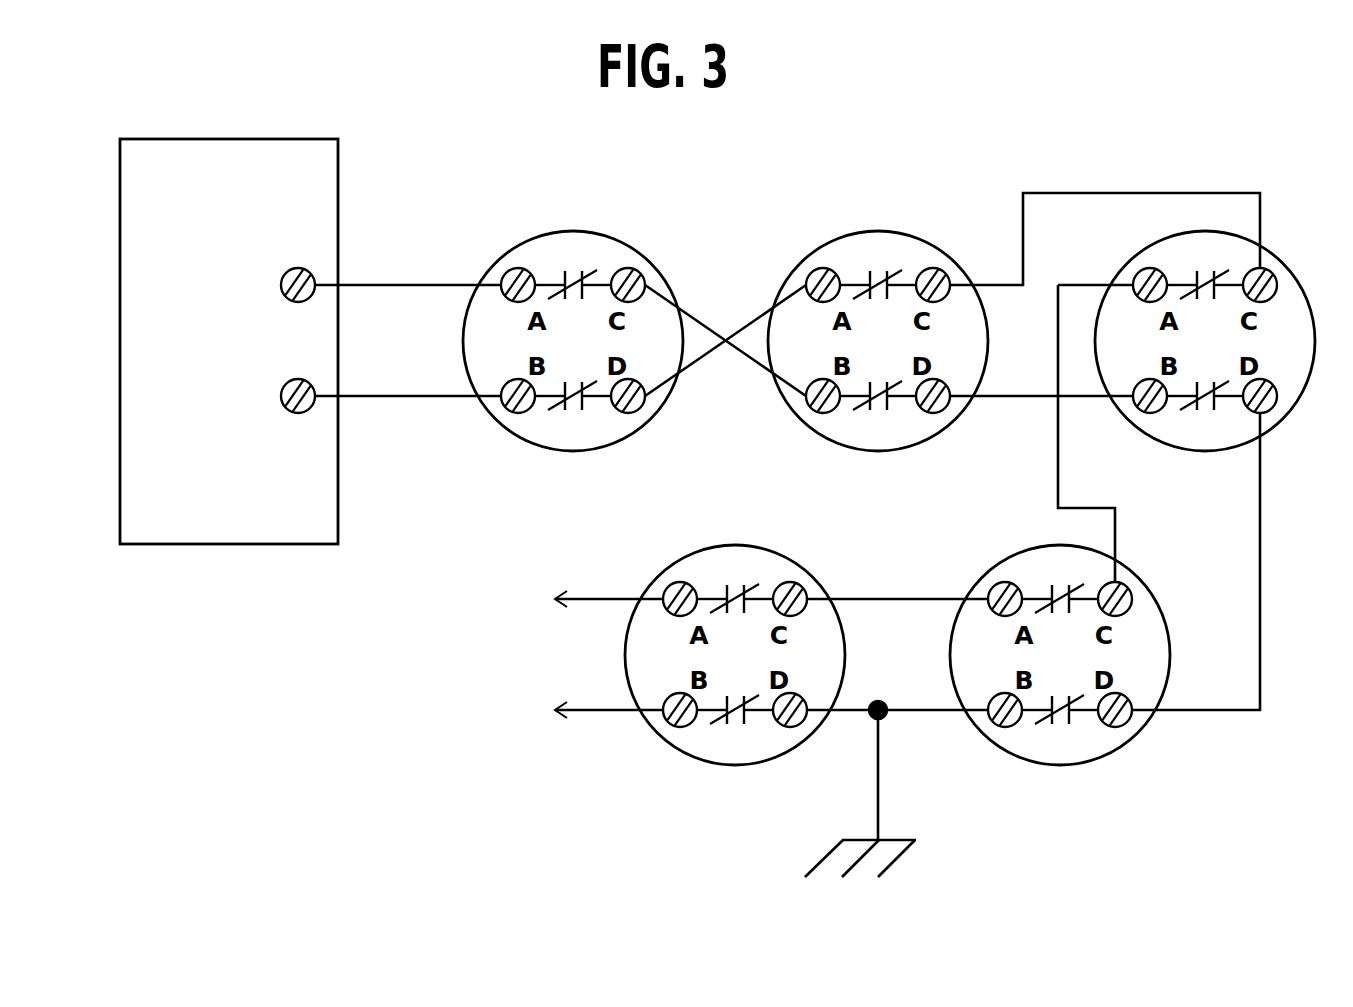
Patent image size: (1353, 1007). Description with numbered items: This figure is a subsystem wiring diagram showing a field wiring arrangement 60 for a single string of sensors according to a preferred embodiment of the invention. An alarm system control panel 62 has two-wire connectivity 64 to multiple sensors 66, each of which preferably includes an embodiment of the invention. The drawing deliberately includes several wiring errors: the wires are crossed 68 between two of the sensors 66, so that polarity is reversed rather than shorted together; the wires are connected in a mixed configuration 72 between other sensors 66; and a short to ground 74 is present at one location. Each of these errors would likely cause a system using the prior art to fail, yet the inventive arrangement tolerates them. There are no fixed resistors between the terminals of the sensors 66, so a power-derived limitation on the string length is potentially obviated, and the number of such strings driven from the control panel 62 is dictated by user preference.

The field wiring arrangement 60 is at (858, 160).
The alarm system control panel 62 is at (209, 353).
The two-wire connectivity 64 is at (392, 285).
The sensors 66 is at (528, 444).
The crossed wires 68 is at (725, 383).
The mixed configuration 72 is at (1001, 412).
The short to ground 74 is at (879, 803).